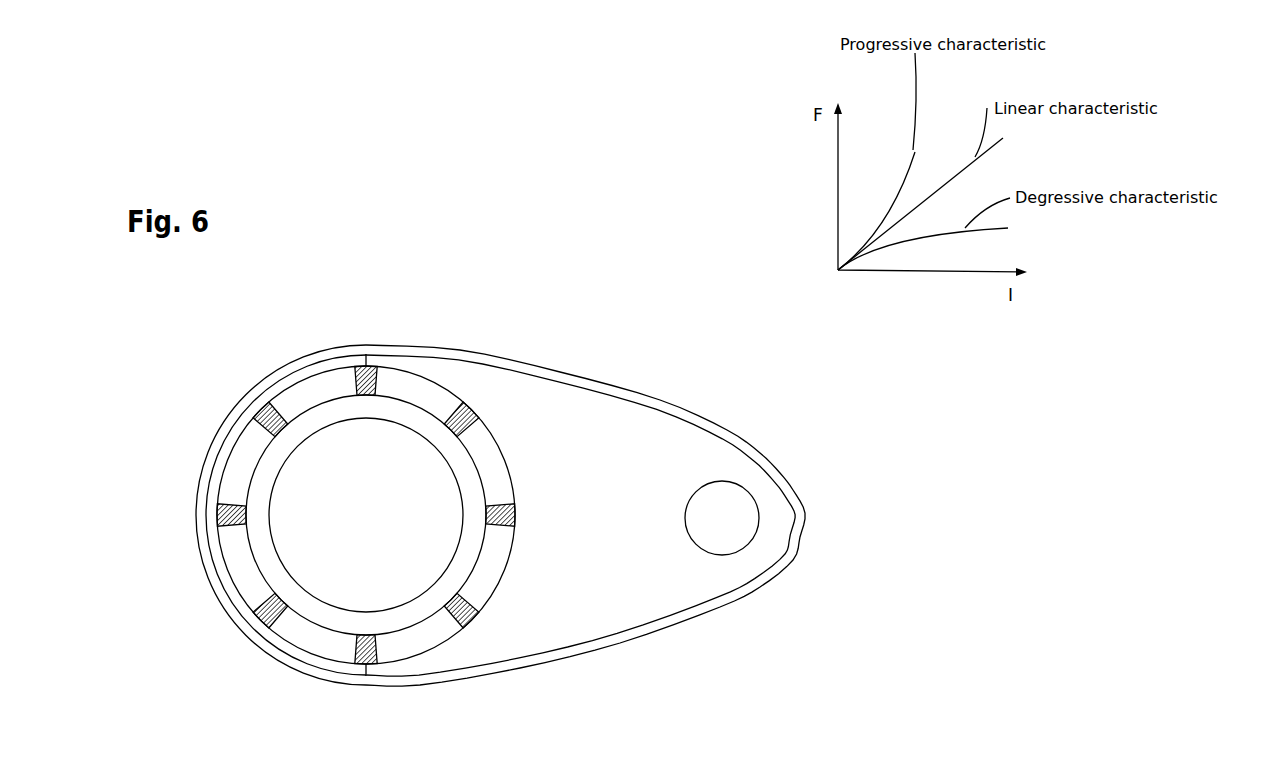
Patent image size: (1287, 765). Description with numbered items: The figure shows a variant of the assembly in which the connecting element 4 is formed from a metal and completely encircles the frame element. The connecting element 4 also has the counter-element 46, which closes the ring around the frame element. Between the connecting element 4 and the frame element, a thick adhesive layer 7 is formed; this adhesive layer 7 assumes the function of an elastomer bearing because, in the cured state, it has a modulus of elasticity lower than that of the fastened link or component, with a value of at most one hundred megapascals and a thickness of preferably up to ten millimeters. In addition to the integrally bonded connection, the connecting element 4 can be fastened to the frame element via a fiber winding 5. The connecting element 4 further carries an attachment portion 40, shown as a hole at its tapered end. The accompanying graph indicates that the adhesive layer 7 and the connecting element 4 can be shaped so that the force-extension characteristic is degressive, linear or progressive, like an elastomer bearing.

The connecting element 4 is at (667, 443).
The fiber winding 5 is at (598, 372).
The adhesive layer 7 is at (415, 397).
The attachment portion 40 is at (767, 478).
The counter-element 46 is at (298, 375).